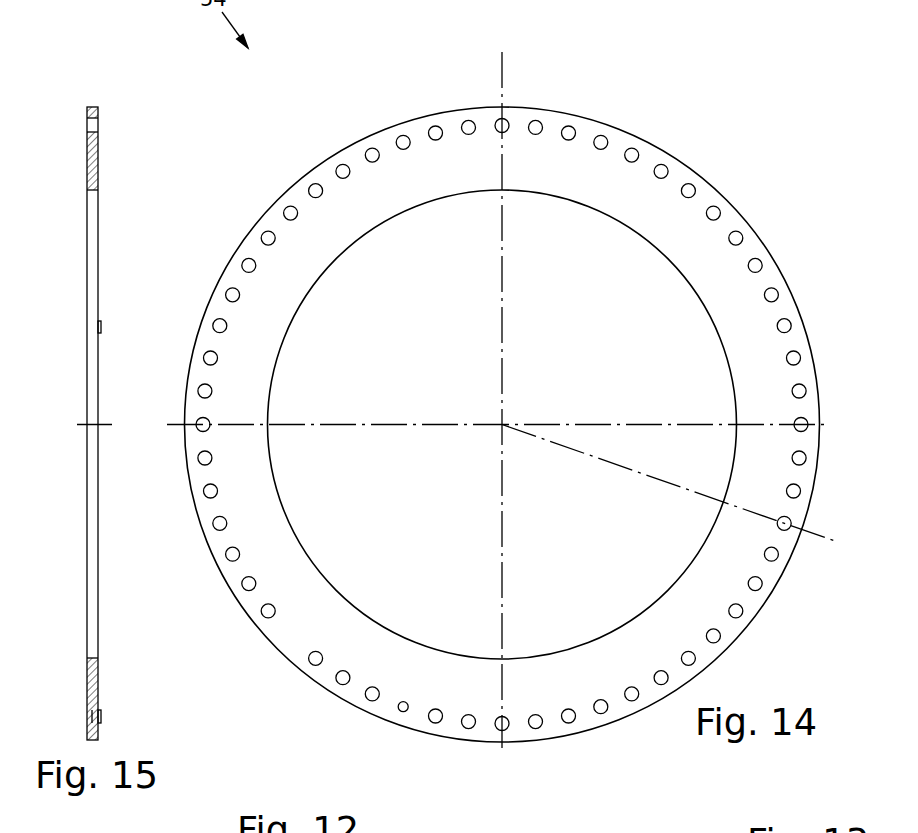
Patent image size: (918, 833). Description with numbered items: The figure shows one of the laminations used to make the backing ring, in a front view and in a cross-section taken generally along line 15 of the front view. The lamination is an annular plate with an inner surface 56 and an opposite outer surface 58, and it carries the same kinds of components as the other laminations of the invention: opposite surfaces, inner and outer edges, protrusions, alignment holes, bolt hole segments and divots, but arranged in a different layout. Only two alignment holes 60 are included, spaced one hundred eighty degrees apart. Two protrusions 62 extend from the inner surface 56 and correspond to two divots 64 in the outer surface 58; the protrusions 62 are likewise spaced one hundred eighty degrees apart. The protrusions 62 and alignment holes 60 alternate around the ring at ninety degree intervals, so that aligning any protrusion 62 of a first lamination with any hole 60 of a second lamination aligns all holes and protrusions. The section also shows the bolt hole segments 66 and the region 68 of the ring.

In FIG. 14, the section line 15- 15 is at (517, 52).
In FIG. 15, the inner surface 56 is at (98, 163).
In FIG. 15, the outer surface 58 is at (87, 178).
In FIG. 14, the alignment holes 60 is at (598, 148).
In FIG. 15, the protrusions 62 is at (100, 322).
In FIG. 14, the divots 64 is at (786, 518).
In FIG. 15, the divots 64 is at (87, 713).
In FIG. 14, the holes 66 is at (440, 128).
In FIG. 15, the holes 66 is at (98, 124).
In FIG. 14, the blank region 68 is at (278, 621).